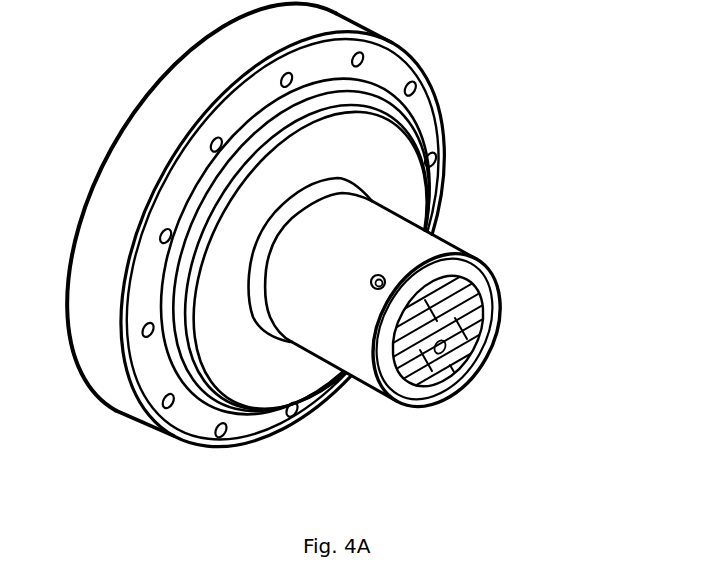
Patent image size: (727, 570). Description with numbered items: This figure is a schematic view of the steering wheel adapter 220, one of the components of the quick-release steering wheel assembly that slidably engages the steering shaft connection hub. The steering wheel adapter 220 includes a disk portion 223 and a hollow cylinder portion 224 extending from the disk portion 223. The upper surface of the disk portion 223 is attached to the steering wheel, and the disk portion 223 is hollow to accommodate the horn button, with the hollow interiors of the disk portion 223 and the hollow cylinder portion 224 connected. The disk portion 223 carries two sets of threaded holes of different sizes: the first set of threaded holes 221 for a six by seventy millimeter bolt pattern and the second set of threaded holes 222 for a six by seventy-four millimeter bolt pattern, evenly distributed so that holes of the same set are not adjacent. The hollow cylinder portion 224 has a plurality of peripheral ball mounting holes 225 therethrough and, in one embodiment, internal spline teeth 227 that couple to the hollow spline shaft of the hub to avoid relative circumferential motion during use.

The steering wheel adapter 220 is at (596, 310).
The first set of threaded holes 221 is at (207, 136).
The second set of threaded holes 222 is at (150, 217).
The disk portion 223 is at (431, 131).
The hollow cylinder portion 224 is at (390, 218).
The peripheral ball mounting holes 225 is at (386, 278).
The internal spline teeth 227 is at (464, 323).